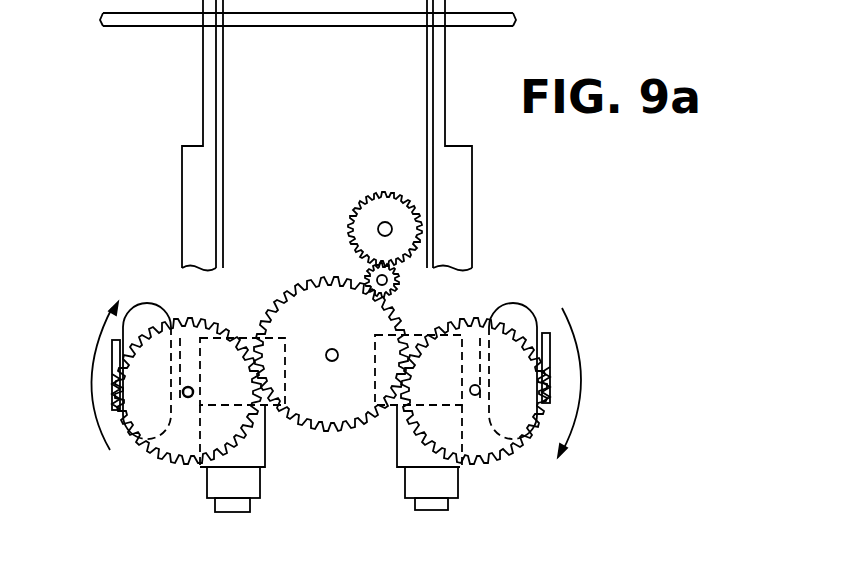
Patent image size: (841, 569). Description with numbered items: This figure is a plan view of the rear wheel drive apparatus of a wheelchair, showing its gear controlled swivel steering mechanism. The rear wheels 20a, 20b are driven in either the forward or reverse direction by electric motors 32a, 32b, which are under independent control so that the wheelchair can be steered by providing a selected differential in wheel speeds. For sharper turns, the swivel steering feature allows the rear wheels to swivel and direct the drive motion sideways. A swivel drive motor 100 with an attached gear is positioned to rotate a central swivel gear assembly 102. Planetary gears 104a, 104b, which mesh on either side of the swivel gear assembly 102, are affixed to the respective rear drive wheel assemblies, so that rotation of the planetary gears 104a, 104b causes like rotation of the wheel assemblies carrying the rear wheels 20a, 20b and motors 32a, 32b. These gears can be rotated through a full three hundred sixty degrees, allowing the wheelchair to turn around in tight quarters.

The swivel drive motor 100 is at (379, 191).
The swivel gear assembly 102 is at (317, 286).
The planetary gear 104a is at (187, 318).
The planetary gear 104b is at (478, 315).
The rear wheel 20a is at (145, 325).
The rear wheel 20b is at (522, 306).
The electric motor 32a is at (253, 447).
The electric motor 32b is at (397, 452).